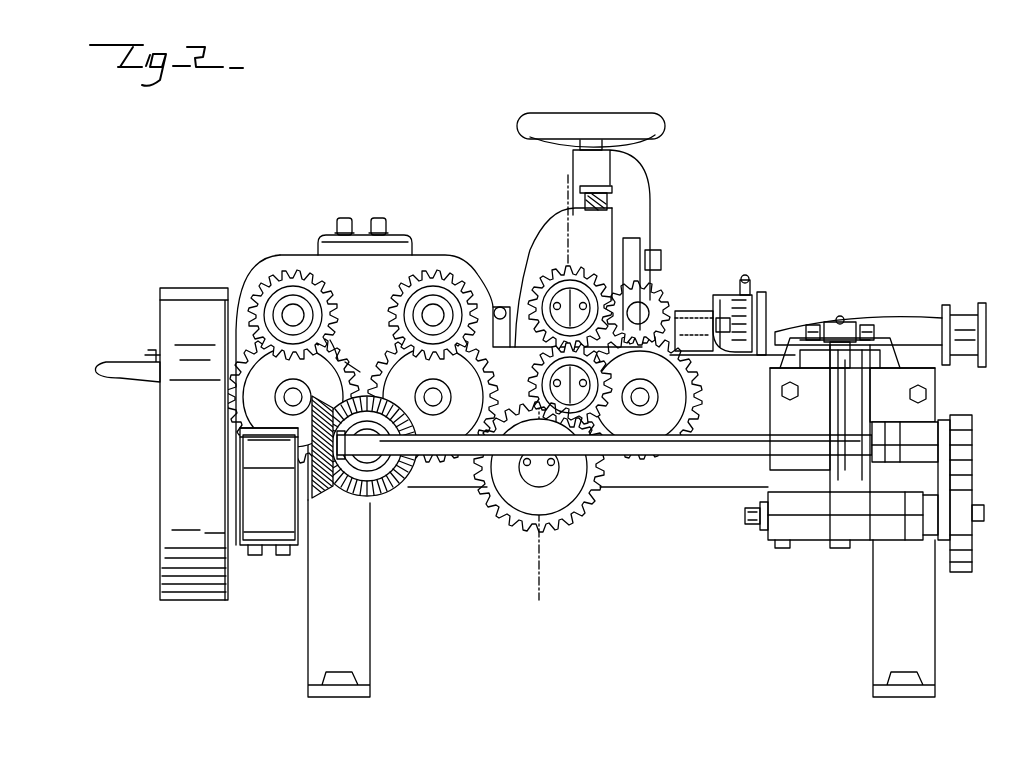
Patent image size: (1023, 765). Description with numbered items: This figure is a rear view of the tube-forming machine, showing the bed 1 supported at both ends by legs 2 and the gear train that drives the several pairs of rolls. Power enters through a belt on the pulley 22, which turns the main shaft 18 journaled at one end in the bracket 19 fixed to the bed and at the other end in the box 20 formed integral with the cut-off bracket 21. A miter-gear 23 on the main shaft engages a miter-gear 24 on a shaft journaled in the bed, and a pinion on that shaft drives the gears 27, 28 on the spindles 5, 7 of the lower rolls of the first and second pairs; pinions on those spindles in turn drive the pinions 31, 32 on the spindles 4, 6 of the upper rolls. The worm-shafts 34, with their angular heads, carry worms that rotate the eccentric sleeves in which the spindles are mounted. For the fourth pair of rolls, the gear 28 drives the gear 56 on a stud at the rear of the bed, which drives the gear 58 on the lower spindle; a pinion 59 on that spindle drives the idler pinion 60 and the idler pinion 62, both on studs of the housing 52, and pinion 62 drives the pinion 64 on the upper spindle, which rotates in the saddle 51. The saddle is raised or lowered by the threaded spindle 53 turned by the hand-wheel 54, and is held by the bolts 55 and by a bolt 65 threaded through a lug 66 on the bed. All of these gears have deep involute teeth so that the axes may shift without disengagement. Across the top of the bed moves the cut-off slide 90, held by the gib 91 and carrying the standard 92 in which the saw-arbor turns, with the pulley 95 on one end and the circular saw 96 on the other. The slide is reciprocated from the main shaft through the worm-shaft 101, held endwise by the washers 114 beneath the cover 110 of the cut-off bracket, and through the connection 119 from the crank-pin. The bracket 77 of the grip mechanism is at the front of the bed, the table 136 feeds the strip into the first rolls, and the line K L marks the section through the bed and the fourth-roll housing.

The bed 1 is at (687, 490).
The legs 2 is at (348, 698).
The spindle of upper roll of first pair of rolls 4 is at (297, 312).
The spindle of lower roll of first pair of rolls 5 is at (288, 400).
The spindle of upper roll of second pair of rolls 6 is at (436, 312).
The spindle of lower roll of second pair of rolls 7 is at (437, 398).
The main shaft 18 is at (726, 456).
The bracket 19 is at (273, 552).
The box 20 is at (915, 445).
The cut-off bracket 21 is at (772, 416).
The pulley 22 is at (162, 454).
The miter-gear 23 is at (320, 500).
The miter-gear 24 is at (392, 497).
The gear 27 is at (328, 348).
The gear 28 is at (361, 358).
The pinion 31 is at (280, 280).
The pinion 32 is at (432, 275).
The worm-shafts 34 is at (378, 218).
The saddle 51 is at (634, 170).
The housing 52 is at (530, 262).
The spindle 53 is at (606, 204).
The hand-wheel 54 is at (666, 125).
The bolts 55 is at (660, 258).
The gear 56 is at (567, 522).
The gear 58 is at (702, 392).
The pinion 59 is at (636, 390).
The pinion 60 is at (536, 384).
The pinion 62 is at (557, 275).
The pinion 64 is at (645, 298).
The bolt 65 is at (734, 300).
The lug 66 is at (695, 313).
The bracket 77 is at (750, 294).
The cut-off slide 90 is at (896, 370).
The gib 91 is at (905, 364).
The standard 92 is at (892, 328).
The pulley 95 is at (962, 320).
The circular saw 96 is at (767, 302).
The worm-shaft 101 is at (746, 518).
The cover 110 is at (810, 540).
The washers 114 is at (762, 530).
The connection 119 is at (843, 328).
The table 136 is at (110, 362).
The section line K L K is at (561, 237).
The section line K L is at (545, 509).